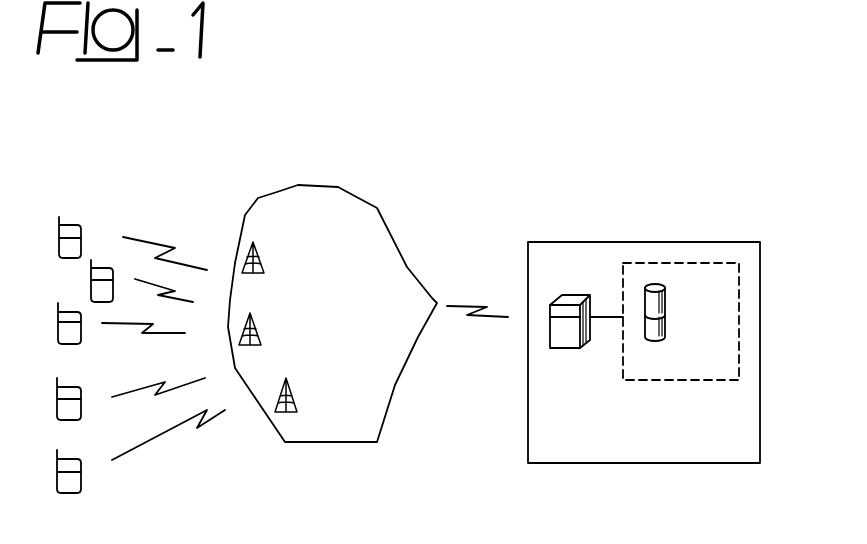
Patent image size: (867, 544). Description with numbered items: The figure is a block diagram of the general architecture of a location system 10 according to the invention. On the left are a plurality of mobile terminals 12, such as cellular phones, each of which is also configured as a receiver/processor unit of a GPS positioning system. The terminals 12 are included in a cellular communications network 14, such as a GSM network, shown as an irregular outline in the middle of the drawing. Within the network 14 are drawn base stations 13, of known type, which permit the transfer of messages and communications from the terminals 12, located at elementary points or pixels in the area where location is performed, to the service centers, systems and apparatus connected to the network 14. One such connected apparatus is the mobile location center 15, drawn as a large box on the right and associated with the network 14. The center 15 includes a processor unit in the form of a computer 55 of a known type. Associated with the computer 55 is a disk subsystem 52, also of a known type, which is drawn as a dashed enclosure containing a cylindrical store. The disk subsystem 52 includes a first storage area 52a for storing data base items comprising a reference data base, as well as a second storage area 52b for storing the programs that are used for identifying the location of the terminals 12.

The location system 10 is at (655, 148).
The mobile terminal 12 is at (75, 245).
The base station 13 is at (265, 257).
The cellular communications network 14 is at (270, 217).
The mobile location center 15 is at (573, 253).
The disk subsystem 52 is at (675, 372).
The first storage area 52a is at (700, 290).
The second storage area 52b is at (667, 324).
The computer 55 is at (568, 337).